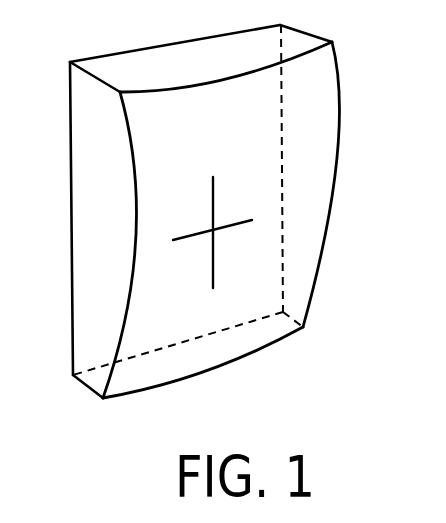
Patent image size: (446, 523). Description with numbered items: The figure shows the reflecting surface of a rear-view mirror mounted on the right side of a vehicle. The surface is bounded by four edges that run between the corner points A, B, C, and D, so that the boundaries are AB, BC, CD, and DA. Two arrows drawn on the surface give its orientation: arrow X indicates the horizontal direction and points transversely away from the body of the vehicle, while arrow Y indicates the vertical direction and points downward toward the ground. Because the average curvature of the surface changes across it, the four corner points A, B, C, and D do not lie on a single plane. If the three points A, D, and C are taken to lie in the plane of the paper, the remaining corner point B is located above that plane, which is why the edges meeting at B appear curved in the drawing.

The point A is at (117, 245).
The point B is at (199, 380).
The point C is at (321, 197).
The point D is at (240, 52).
The arrow X is at (216, 217).
The arrow Y is at (207, 247).